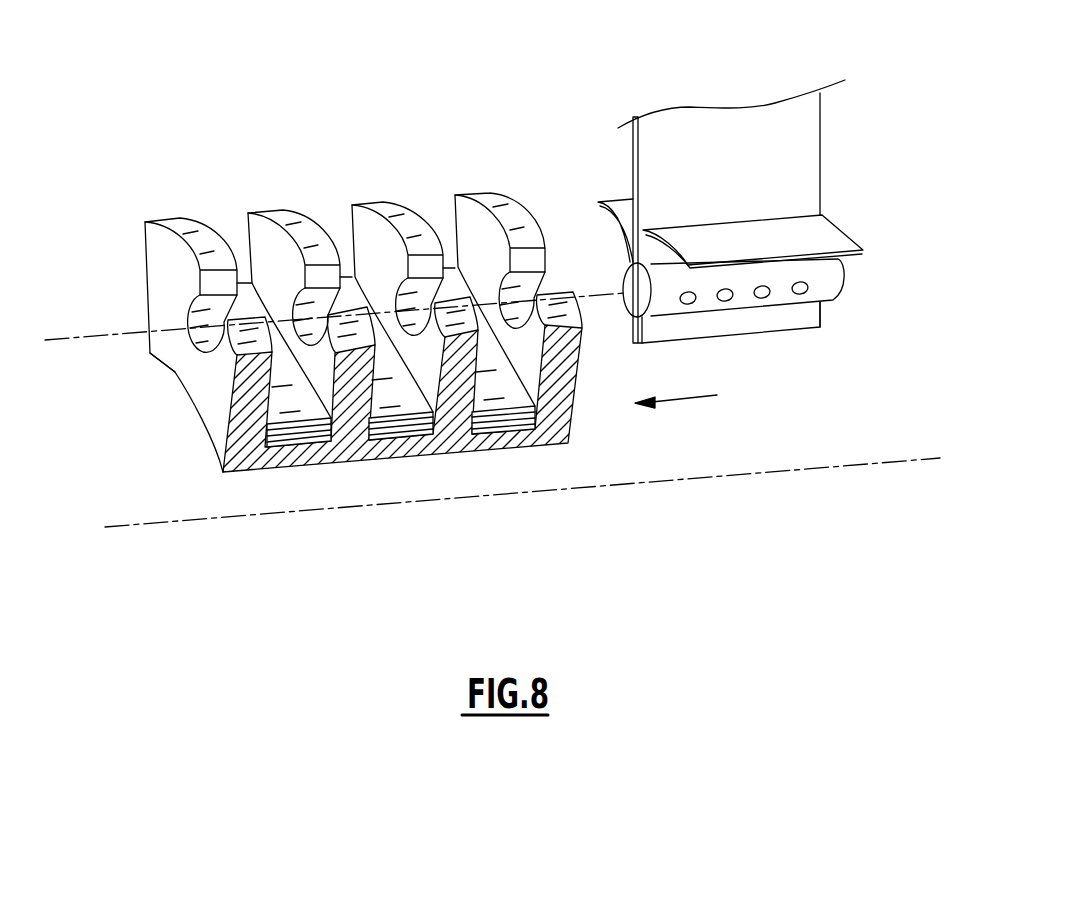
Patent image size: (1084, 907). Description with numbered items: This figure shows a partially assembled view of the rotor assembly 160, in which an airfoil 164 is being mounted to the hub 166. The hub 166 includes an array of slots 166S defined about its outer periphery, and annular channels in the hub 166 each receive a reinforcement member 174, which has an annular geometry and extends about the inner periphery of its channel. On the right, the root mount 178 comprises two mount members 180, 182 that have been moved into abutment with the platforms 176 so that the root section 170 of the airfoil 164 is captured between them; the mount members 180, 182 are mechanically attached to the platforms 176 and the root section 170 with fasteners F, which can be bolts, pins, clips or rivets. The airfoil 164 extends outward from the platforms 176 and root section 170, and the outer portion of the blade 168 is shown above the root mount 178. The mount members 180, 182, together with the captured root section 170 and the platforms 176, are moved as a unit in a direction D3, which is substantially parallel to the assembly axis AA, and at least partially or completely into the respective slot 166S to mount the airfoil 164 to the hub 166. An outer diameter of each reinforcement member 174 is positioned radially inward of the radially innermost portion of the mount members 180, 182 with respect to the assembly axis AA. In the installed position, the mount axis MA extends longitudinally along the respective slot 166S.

The stator core segment 160 is at (120, 78).
The airfoil 164 is at (645, 92).
The hub 166 is at (157, 197).
The slots 166S is at (173, 370).
The nozzle plate 168 is at (812, 134).
The root section 170 is at (628, 274).
The reinforcement member 174 is at (292, 423).
The platforms 176 is at (608, 186).
The root mount 178 is at (849, 265).
The mount member 180 is at (624, 308).
The mount member 182 is at (840, 290).
The fasteners F is at (726, 302).
The direction D3 is at (692, 398).
The mount axis MA is at (128, 330).
The assembly axis AA is at (785, 472).